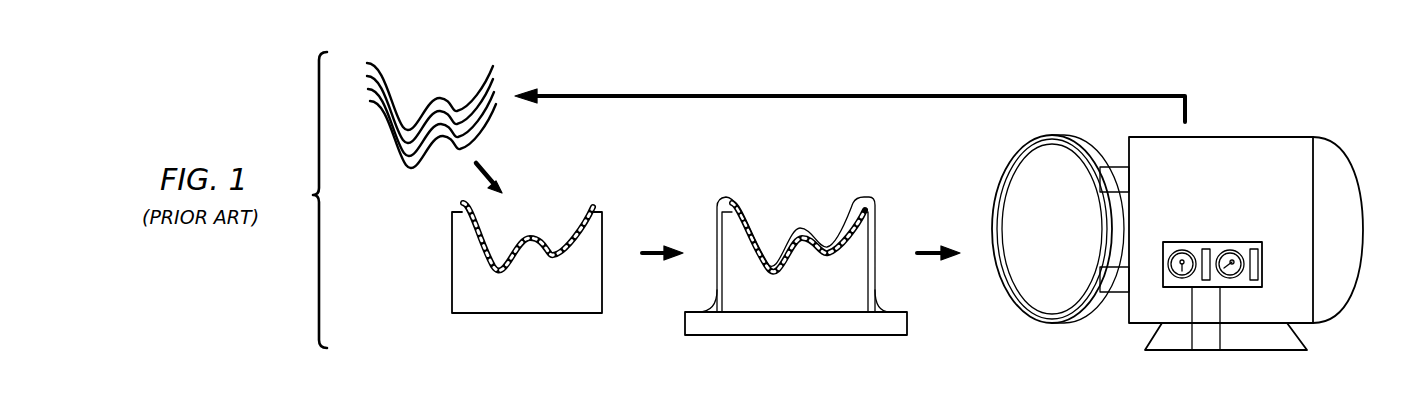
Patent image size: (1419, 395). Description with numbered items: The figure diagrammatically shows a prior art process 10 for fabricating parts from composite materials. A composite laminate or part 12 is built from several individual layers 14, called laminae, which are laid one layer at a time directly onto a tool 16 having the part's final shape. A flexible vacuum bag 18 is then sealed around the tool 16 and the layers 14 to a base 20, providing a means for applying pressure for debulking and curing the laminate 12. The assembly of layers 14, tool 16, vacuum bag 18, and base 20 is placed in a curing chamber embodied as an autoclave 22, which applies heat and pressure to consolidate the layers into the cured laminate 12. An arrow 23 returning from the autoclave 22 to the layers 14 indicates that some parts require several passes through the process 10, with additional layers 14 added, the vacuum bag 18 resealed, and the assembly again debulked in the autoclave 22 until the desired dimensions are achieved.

The process 10 is at (1218, 65).
The composite laminate 12 is at (537, 235).
The layers 14 is at (428, 92).
The tool 16 is at (541, 298).
The vacuum bag 18 is at (727, 195).
The base 20 is at (907, 320).
The autoclave 22 is at (1242, 134).
The arrow 23 is at (1120, 94).